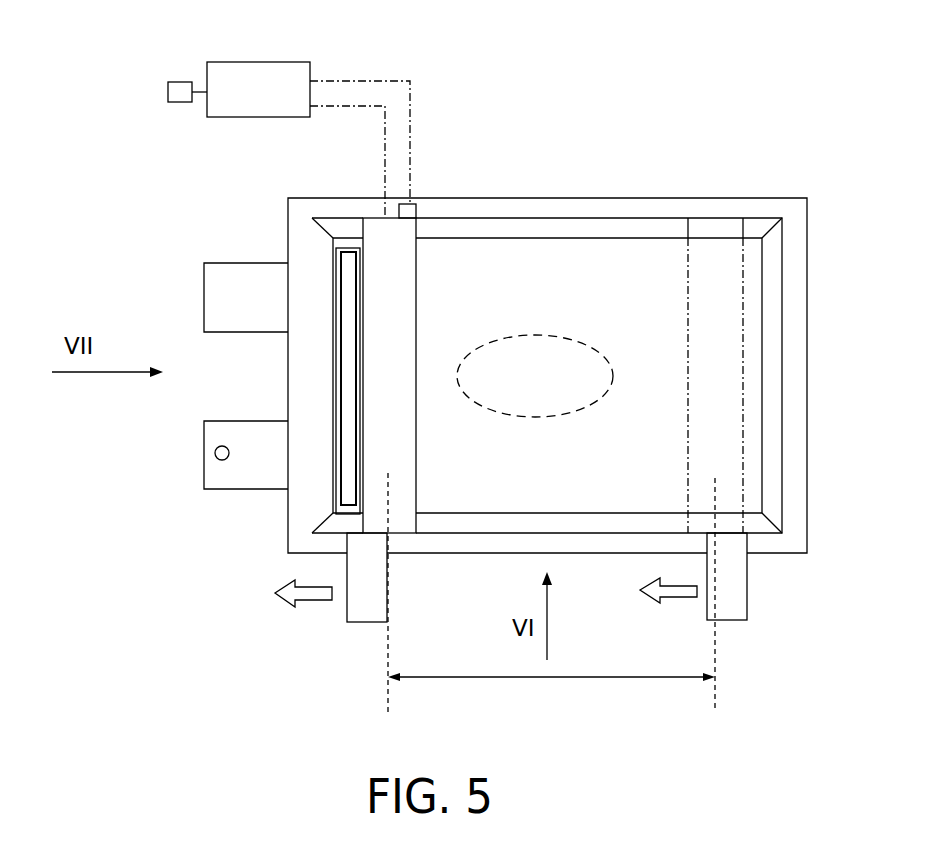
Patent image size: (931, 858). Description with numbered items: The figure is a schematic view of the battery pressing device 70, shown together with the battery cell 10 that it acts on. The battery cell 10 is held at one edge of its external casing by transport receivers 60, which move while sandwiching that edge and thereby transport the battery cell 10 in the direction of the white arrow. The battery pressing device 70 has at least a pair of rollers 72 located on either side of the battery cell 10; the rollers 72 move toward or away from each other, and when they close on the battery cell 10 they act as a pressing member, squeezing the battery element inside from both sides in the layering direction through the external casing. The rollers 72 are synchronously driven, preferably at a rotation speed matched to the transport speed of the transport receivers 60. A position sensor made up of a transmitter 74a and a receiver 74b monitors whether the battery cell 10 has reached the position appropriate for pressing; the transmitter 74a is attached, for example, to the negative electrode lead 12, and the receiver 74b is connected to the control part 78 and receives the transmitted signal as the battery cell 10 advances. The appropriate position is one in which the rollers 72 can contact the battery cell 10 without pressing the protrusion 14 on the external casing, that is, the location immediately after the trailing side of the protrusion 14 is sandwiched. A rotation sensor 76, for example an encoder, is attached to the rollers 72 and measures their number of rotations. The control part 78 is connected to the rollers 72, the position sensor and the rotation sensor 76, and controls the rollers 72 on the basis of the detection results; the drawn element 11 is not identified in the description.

The battery pressing device 70 is at (95, 71).
The control part 78 is at (292, 63).
The receiver 74b is at (177, 87).
The transmitter 74a is at (225, 460).
The battery cell 10 is at (503, 203).
The first unit 11 is at (217, 267).
The negative electrode lead 12 is at (217, 426).
The protrusion 14 is at (350, 252).
The rollers 72 is at (376, 222).
The rotation sensor 76 is at (420, 201).
The transport receivers 60 is at (365, 612).